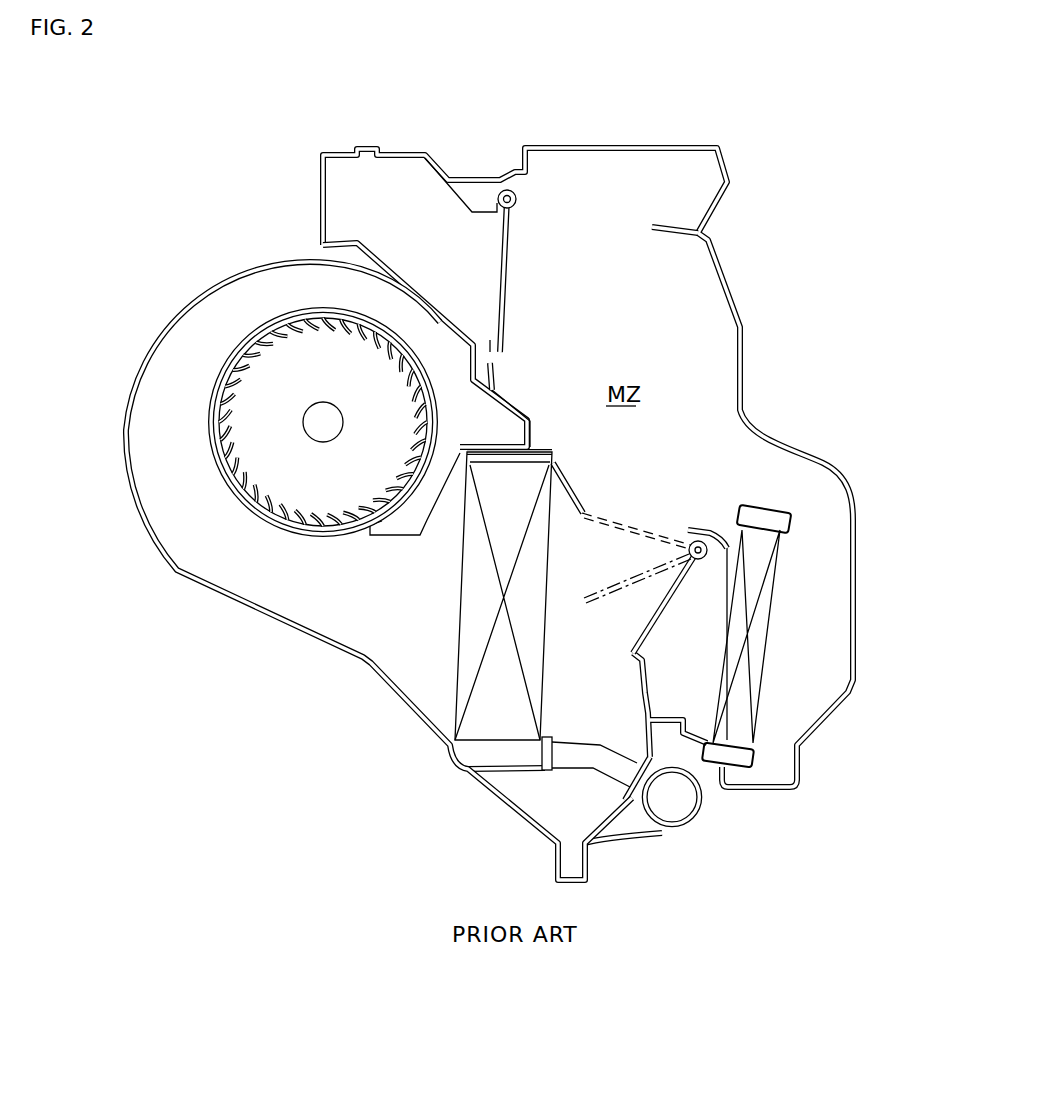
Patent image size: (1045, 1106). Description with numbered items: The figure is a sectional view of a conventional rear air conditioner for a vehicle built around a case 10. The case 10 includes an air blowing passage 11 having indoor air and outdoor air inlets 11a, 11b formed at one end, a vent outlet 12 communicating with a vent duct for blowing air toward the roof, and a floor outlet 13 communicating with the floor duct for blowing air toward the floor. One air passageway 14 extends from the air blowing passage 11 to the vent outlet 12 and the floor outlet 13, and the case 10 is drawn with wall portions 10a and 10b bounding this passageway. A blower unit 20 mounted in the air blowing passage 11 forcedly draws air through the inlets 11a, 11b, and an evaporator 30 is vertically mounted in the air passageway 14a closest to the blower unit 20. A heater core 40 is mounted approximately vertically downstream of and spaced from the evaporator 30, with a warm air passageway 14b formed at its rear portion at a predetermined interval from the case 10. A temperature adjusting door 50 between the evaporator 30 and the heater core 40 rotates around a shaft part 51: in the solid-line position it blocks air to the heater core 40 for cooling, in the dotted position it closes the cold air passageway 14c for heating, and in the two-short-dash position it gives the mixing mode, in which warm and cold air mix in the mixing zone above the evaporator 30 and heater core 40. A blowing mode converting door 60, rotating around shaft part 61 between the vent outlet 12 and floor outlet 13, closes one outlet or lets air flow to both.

The case 10 is at (617, 463).
The case right wall 10a is at (858, 568).
The partition wall 10b is at (510, 403).
The air blowing passage 11 is at (175, 385).
The indoor air inlet 11a is at (275, 477).
The outdoor air inlet 11b is at (267, 515).
The vent outlet 12 is at (650, 162).
The floor outlet 13 is at (397, 170).
The air passageway 14 is at (590, 677).
The air passageway closest to the blower unit 14a is at (357, 670).
The warm air passageway 14b is at (822, 645).
The cold air passageway 14c is at (625, 465).
The blower unit 20 is at (260, 474).
The evaporator 30 is at (507, 725).
The heater core 40 is at (738, 700).
The temperature adjusting door 50 is at (695, 522).
The shaft part 51 is at (703, 540).
The blowing mode converting door 60 is at (527, 234).
The shaft part 61 is at (500, 190).